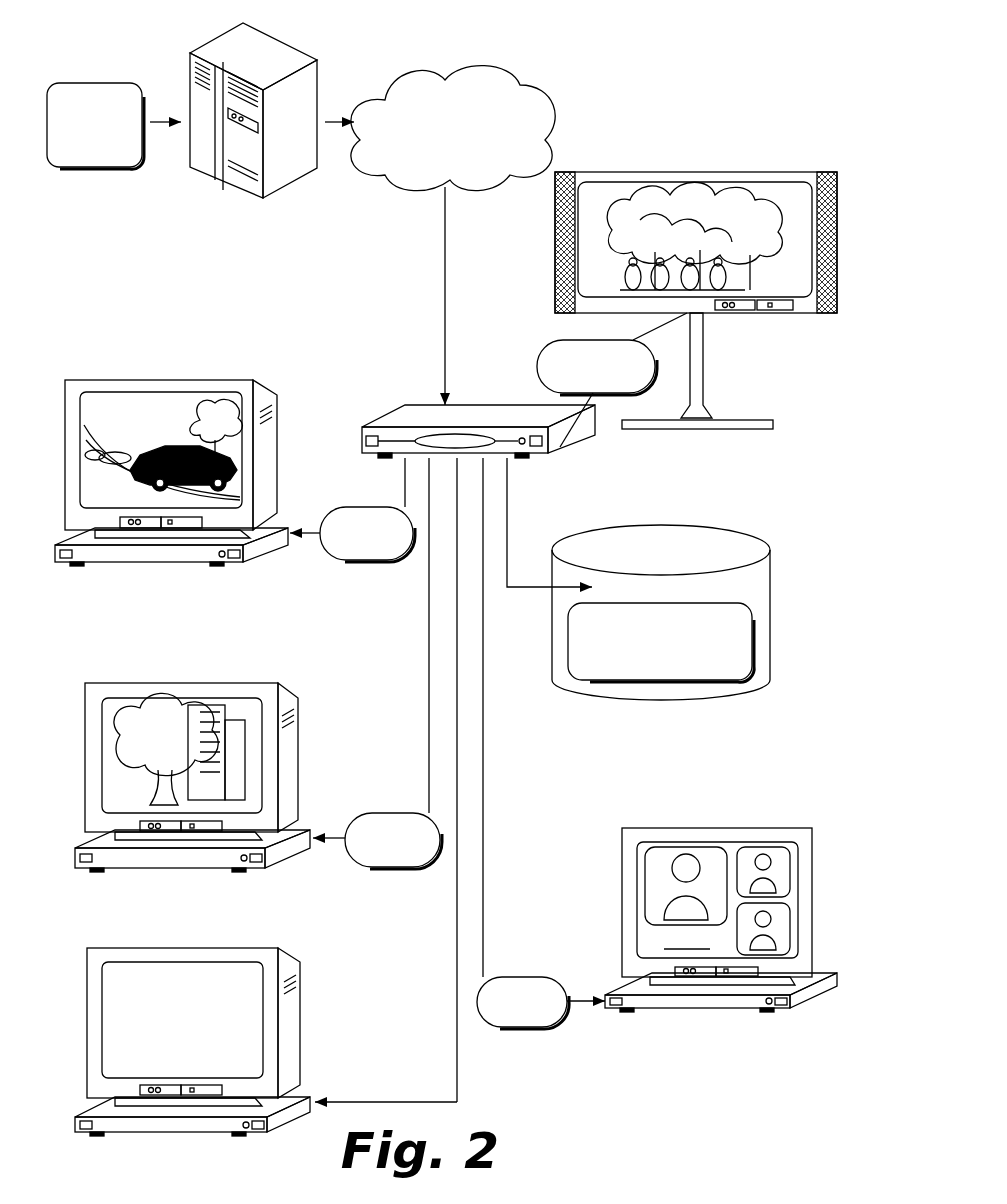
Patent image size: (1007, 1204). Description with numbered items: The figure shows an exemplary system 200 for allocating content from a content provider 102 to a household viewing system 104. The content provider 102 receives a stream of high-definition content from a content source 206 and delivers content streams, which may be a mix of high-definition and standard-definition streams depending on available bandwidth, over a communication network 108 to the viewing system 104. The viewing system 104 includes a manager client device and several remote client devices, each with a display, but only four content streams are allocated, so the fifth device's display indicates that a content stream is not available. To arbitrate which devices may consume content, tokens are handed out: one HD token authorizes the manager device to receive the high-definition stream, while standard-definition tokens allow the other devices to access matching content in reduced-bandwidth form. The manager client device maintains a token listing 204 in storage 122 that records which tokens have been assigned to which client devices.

The system 200 is at (618, 65).
The content source 206 is at (80, 157).
The content provider 102 is at (241, 255).
The communication network 108 is at (431, 162).
The viewing system 104 is at (398, 310).
The storage 122 is at (647, 593).
The token listing 204 is at (646, 661).